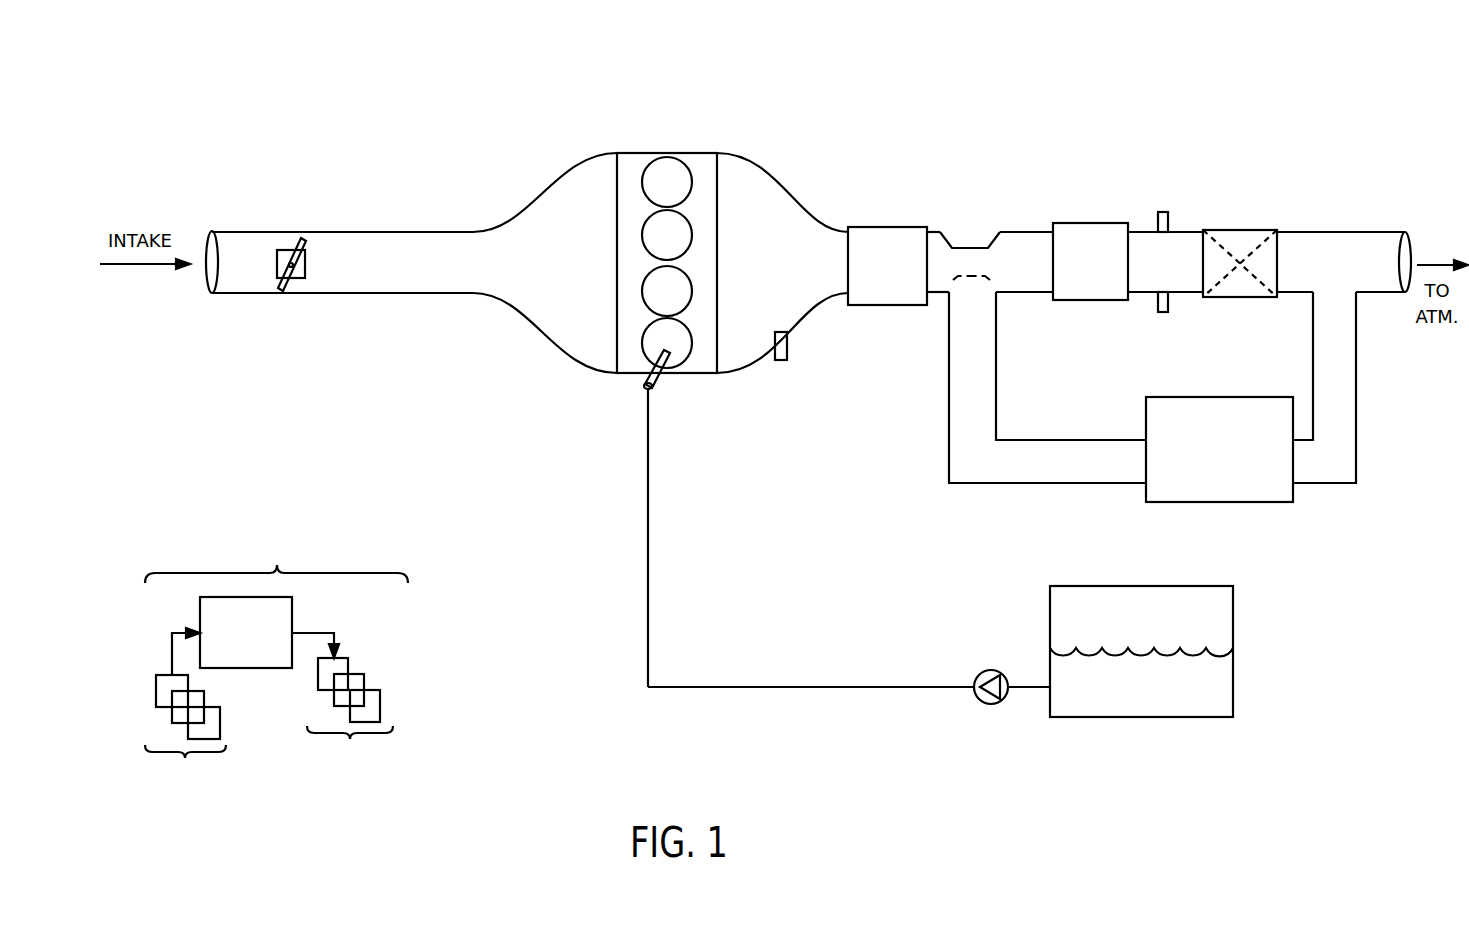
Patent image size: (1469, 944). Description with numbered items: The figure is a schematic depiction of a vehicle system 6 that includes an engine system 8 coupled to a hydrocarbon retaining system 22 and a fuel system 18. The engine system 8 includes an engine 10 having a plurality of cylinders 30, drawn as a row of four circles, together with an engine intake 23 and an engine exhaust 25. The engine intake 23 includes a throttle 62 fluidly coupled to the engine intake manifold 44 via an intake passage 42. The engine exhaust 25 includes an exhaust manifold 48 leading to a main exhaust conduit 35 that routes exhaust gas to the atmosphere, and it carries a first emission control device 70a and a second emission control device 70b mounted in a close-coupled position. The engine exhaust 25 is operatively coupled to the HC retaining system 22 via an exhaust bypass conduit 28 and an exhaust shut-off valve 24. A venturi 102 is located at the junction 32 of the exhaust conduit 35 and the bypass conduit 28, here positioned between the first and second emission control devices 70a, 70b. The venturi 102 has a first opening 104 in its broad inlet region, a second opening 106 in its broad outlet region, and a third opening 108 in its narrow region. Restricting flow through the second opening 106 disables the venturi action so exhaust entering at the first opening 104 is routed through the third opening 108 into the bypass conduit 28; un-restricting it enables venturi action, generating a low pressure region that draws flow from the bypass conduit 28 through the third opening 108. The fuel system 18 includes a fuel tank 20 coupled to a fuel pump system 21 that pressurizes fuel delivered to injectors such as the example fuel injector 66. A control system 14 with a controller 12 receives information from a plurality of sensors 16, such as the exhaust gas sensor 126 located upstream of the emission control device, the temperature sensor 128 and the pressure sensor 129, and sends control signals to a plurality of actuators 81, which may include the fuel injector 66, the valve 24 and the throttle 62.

The vehicle system 6 is at (188, 118).
The engine system 8 is at (1279, 84).
The engine 10 is at (684, 263).
The controller 12 is at (246, 632).
The control system 14 is at (276, 662).
The sensors 16 is at (185, 715).
The fuel system 18 is at (1153, 766).
The fuel tank 20 is at (1233, 695).
The fuel pump system 21 is at (991, 670).
The hydrocarbon retaining system 22 is at (1165, 397).
The engine intake 23 is at (477, 185).
The exhaust shut-off valve 24 is at (1240, 230).
The engine exhaust 25 is at (942, 170).
The exhaust bypass conduit 28 is at (1152, 387).
The cylinders 30 is at (689, 186).
The junction 32 is at (1000, 291).
The main exhaust conduit 35 is at (1340, 232).
The intake passage 42 is at (320, 294).
The engine intake manifold 44 is at (545, 263).
The exhaust manifold 48 is at (782, 263).
The throttle 62 is at (305, 262).
The fuel injector 66 is at (654, 383).
The first emission control device 70a is at (887, 266).
The second emission control device 70b is at (1090, 261).
The actuators 81 is at (343, 709).
The venturi 102 is at (969, 216).
The first opening 104 is at (950, 265).
The second opening 106 is at (995, 265).
The third opening 108 is at (968, 275).
The exhaust gas sensor 126 is at (787, 341).
The temperature sensor 128 is at (1168, 302).
The pressure sensor 129 is at (1168, 223).